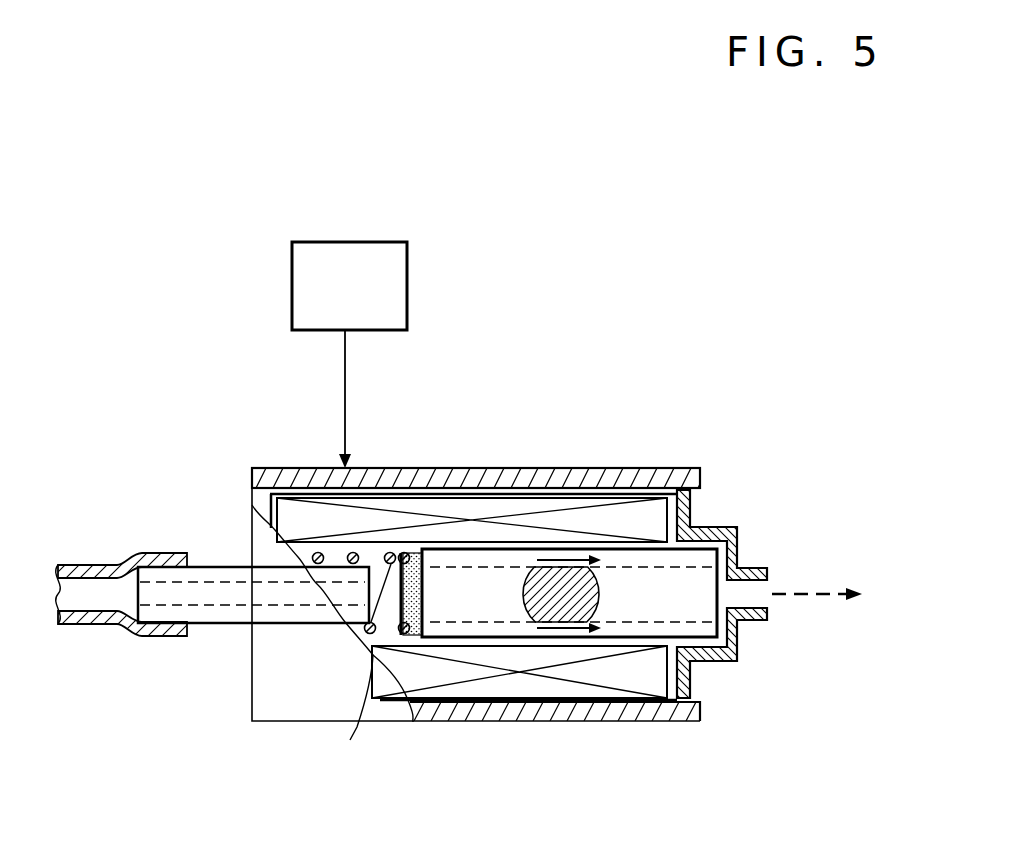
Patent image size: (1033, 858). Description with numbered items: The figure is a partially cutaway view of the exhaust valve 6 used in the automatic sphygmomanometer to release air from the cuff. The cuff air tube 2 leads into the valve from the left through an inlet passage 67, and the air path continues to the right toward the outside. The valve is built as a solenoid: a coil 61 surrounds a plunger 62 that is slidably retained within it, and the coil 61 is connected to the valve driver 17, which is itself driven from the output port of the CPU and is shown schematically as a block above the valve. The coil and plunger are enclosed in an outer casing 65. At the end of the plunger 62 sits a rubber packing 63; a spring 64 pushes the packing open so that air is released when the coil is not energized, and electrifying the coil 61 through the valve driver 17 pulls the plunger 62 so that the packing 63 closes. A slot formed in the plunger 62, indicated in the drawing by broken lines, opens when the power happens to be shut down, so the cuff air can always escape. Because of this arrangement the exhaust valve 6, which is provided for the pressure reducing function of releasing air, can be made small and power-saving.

The valve driver 17 is at (353, 243).
The exhaust valve 6 is at (467, 434).
The casing 65 is at (555, 477).
The coil 61 is at (627, 518).
The plunger 62 is at (443, 610).
The rubber packing 63 is at (399, 612).
The spring 64 is at (312, 558).
The inlet pipe 67 is at (217, 616).
The air tube 2 is at (81, 590).